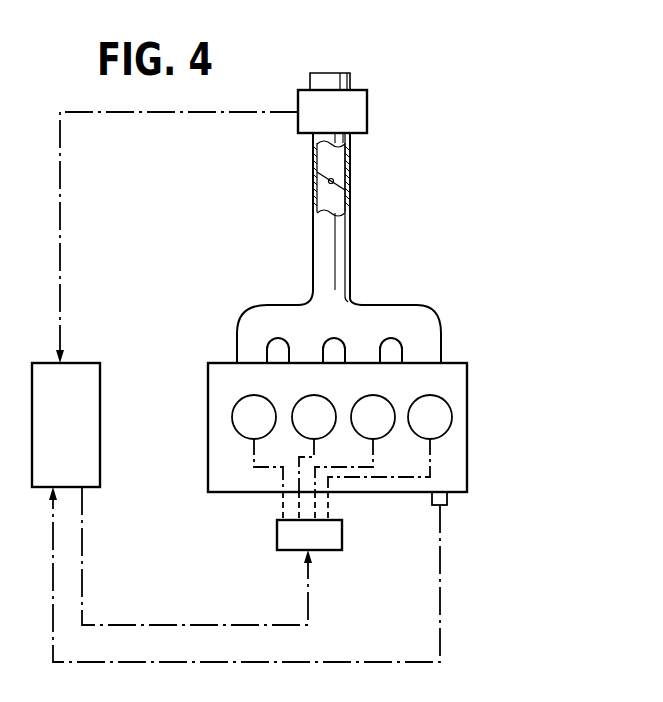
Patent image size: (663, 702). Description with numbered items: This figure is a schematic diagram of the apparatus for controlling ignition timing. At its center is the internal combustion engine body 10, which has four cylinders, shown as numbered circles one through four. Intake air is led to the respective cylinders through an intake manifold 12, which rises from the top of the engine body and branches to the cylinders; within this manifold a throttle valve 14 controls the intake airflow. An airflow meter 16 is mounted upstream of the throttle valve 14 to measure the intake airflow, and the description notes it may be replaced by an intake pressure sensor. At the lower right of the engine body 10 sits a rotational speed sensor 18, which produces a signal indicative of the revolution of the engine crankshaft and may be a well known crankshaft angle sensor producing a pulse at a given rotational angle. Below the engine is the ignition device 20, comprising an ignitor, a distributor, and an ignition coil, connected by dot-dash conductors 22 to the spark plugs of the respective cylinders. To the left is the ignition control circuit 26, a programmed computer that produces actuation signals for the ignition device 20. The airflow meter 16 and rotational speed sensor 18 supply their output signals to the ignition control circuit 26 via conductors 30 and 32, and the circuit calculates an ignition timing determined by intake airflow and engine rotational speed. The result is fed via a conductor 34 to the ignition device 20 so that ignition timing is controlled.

The internal combustion engine body 10 is at (468, 422).
The intake manifold 12 is at (347, 252).
The throttle valve 14 is at (350, 183).
The airflow meter 16 is at (362, 112).
The rotational speed sensor 18 is at (447, 497).
The ignition device 20 is at (342, 541).
The conductors 22 is at (283, 509).
The ignition control circuit 26 is at (93, 423).
The conductor 30 is at (62, 232).
The conductor 32 is at (52, 588).
The conductor 34 is at (83, 588).